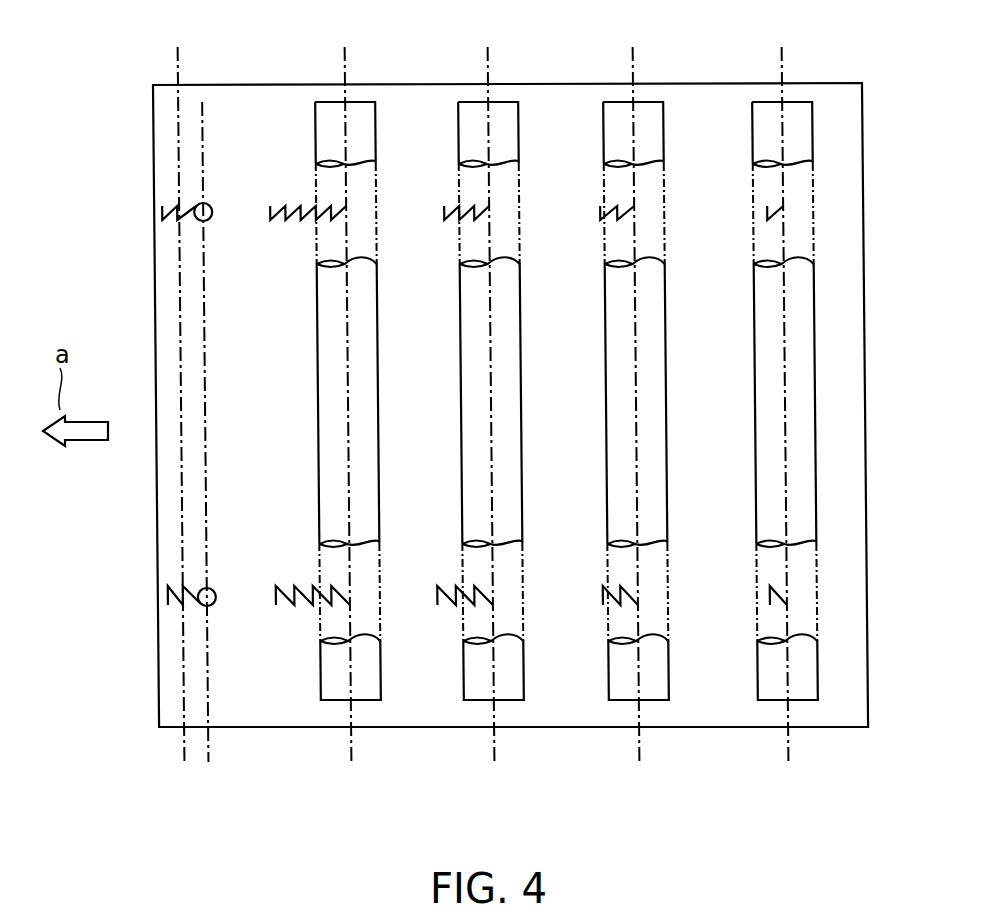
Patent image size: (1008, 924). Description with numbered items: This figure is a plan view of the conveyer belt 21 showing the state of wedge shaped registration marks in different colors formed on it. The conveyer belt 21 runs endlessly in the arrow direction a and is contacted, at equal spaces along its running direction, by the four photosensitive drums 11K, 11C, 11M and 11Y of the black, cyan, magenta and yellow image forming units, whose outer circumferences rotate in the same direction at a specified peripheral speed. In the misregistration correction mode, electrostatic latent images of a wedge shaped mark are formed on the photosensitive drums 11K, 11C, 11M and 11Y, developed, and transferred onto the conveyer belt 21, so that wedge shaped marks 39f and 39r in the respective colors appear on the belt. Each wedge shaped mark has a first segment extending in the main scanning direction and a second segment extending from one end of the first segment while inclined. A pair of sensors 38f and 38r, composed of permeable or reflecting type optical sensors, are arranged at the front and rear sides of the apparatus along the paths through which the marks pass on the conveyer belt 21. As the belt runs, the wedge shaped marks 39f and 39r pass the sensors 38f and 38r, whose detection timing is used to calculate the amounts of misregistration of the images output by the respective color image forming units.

The conveyer belt 21 is at (238, 96).
The photosensitive drum 11K is at (353, 113).
The photosensitive drum 11C is at (502, 113).
The photosensitive drum 11M is at (640, 113).
The photosensitive drum 11Y is at (795, 113).
The sensor 38r is at (215, 203).
The sensor 38f is at (226, 610).
The wedge shaped mark 39r is at (284, 240).
The wedge shaped mark 39f is at (285, 580).